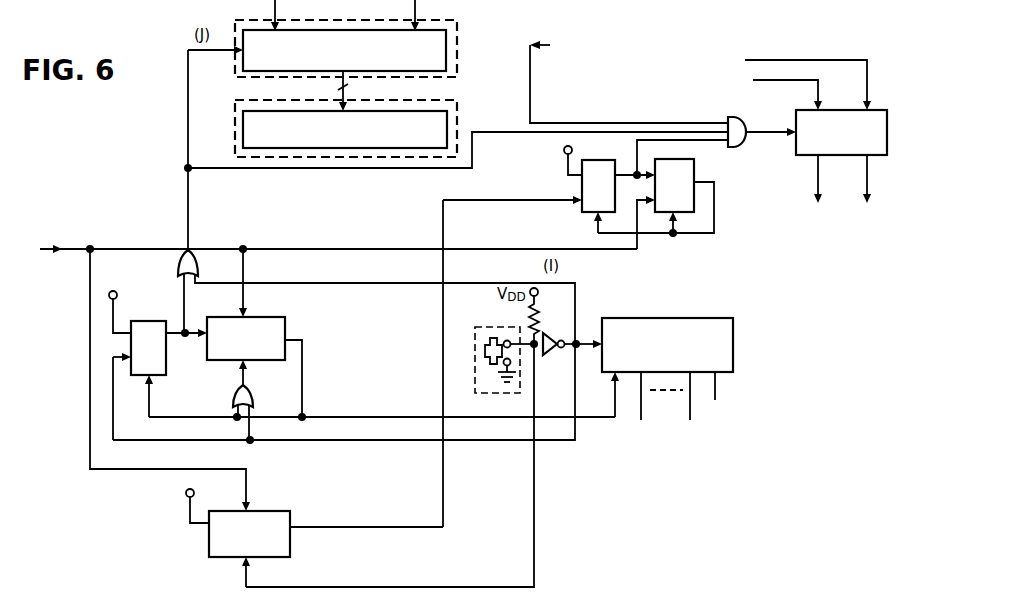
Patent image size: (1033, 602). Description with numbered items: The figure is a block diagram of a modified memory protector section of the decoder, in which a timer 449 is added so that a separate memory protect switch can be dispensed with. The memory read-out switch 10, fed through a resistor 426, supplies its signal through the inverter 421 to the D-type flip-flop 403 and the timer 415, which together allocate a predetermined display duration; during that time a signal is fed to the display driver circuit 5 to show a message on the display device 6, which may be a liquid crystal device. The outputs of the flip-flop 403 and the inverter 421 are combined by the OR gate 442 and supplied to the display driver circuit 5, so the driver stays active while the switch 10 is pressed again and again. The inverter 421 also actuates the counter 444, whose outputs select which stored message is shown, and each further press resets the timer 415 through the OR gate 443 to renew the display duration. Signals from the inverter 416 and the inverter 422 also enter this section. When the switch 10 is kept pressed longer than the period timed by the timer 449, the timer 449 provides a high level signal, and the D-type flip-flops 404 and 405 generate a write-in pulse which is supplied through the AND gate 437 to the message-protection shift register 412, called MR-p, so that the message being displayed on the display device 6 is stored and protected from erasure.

The display driver circuit 5 is at (458, 71).
The display device 6 is at (458, 130).
The memory read-out switch 10 is at (472, 351).
The D-type flip-flop 403 is at (147, 320).
The D-type flip-flop 404 is at (622, 164).
The D-type flip-flop 405 is at (698, 173).
The shift register MR-p 412 is at (796, 112).
The timer 415 is at (292, 331).
The inverter 416 is at (324, 231).
The inverter 421 is at (548, 352).
The inverter 422 is at (629, 75).
The resistor 426 is at (540, 321).
The AND gate 437 is at (733, 118).
The OR gate 442 is at (203, 256).
The OR gate 443 is at (233, 406).
The counter 444 is at (655, 317).
The timer 449 is at (292, 551).